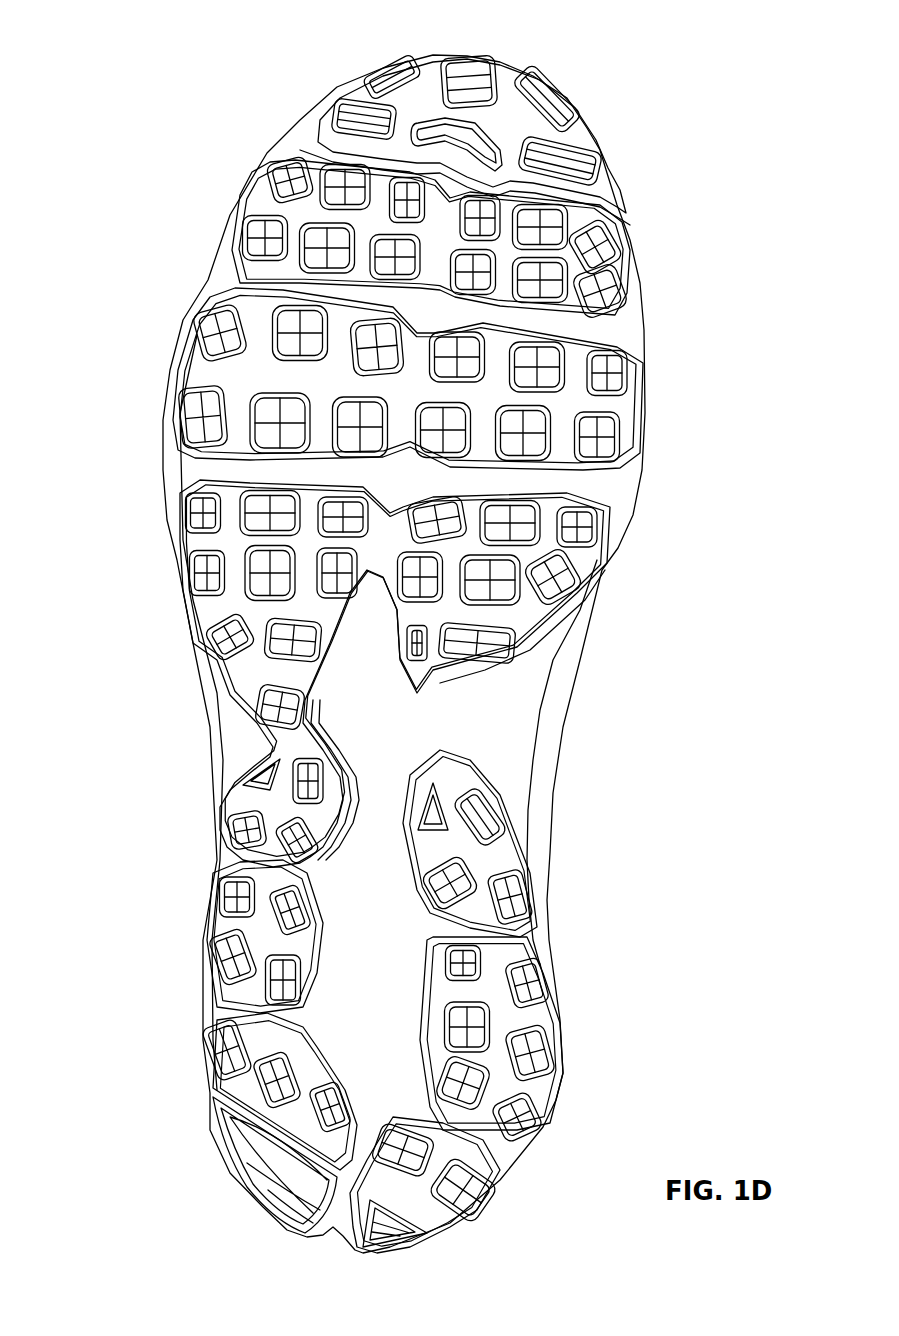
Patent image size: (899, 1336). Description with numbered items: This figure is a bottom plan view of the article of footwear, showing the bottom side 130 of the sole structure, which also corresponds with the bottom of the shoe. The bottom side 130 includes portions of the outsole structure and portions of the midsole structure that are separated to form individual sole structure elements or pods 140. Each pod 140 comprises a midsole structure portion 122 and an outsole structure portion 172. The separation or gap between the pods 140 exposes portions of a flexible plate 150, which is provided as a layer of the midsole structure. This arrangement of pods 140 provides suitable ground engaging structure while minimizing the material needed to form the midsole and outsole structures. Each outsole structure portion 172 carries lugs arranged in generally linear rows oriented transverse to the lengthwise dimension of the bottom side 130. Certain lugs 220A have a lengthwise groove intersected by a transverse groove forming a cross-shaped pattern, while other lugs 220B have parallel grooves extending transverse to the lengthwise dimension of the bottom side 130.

The bottom side 130 is at (650, 61).
The midsole structure portion 122 is at (210, 603).
The outsole structure portion 172 is at (193, 513).
The pod 140 is at (578, 595).
The flexible plate 150 is at (440, 726).
The lug 220A is at (470, 1197).
The lug 220B is at (410, 1233).